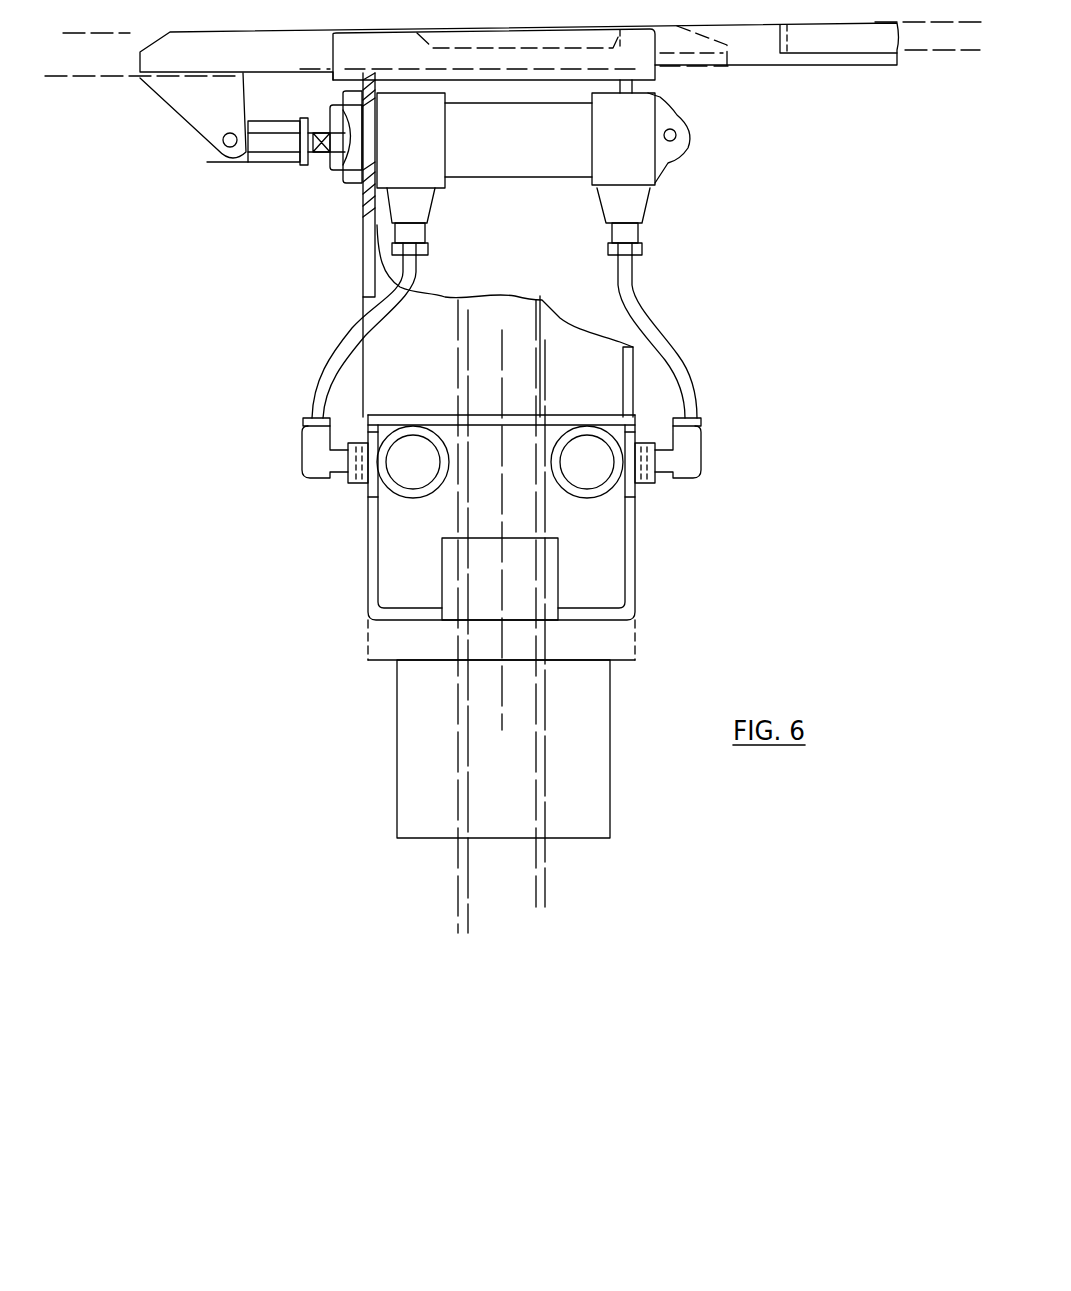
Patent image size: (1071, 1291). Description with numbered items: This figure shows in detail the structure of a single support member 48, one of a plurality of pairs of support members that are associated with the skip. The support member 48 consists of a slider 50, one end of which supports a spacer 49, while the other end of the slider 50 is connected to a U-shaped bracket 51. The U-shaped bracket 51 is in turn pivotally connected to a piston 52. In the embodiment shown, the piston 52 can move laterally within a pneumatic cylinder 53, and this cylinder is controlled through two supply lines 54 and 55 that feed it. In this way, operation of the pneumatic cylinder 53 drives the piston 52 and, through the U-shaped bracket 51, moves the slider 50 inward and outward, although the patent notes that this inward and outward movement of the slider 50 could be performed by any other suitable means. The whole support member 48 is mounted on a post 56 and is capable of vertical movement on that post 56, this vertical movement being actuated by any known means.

The support member 48 is at (352, 261).
The spacer 49 is at (843, 45).
The slider 50 is at (762, 58).
The U-shaped bracket 51 is at (200, 117).
The piston 52 is at (273, 144).
The pneumatic cylinder 53 is at (570, 152).
The supply line 54 is at (340, 358).
The supply line 55 is at (632, 305).
The post 56 is at (490, 718).